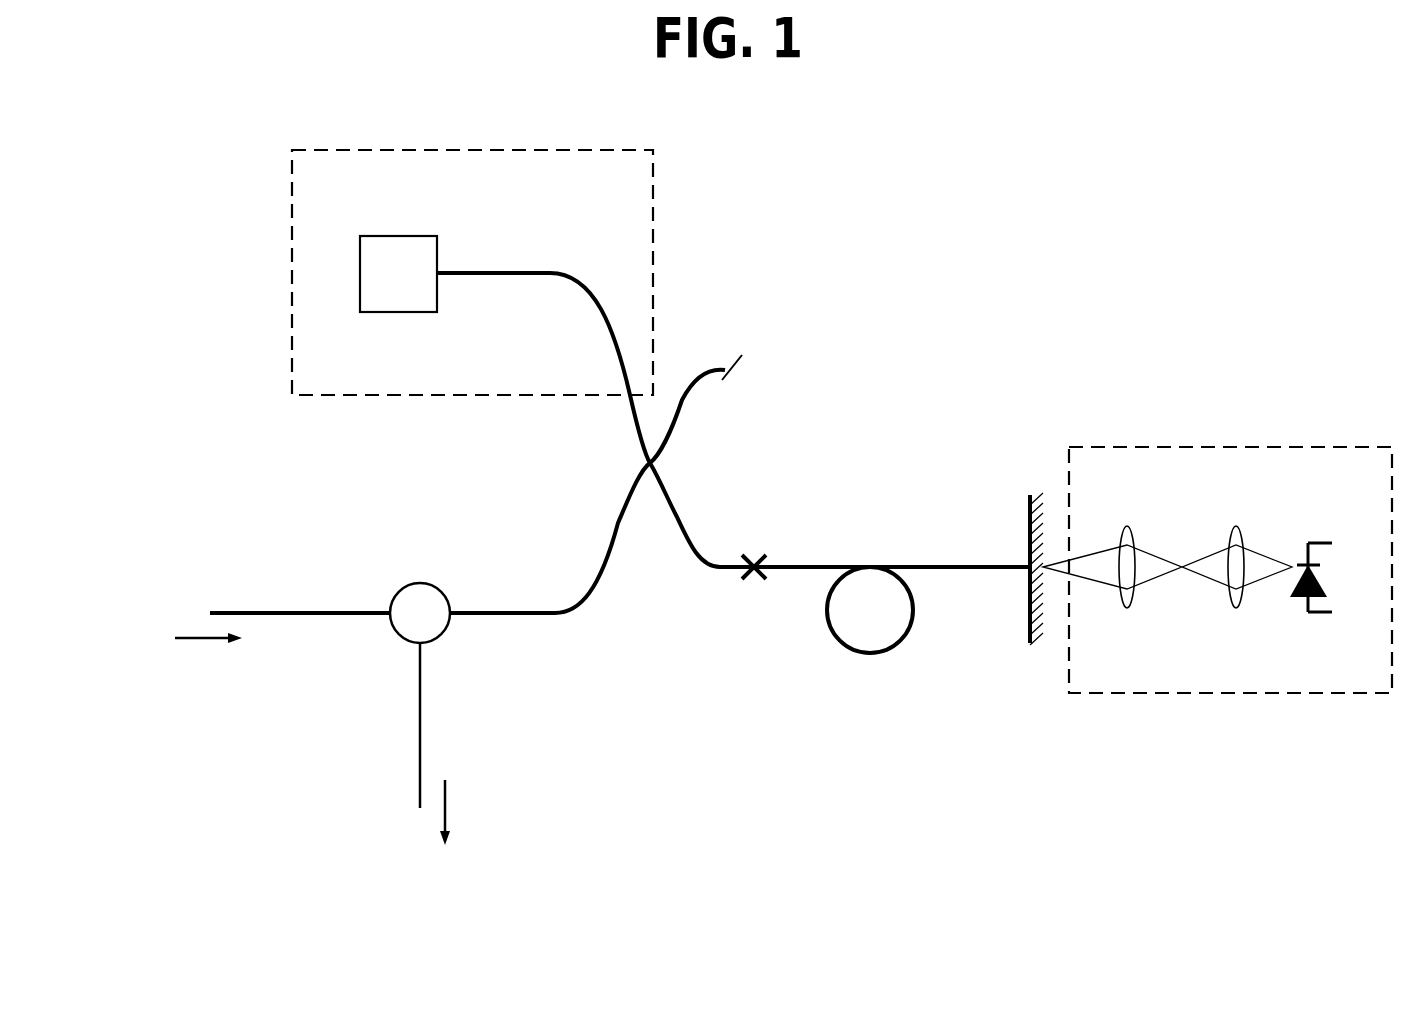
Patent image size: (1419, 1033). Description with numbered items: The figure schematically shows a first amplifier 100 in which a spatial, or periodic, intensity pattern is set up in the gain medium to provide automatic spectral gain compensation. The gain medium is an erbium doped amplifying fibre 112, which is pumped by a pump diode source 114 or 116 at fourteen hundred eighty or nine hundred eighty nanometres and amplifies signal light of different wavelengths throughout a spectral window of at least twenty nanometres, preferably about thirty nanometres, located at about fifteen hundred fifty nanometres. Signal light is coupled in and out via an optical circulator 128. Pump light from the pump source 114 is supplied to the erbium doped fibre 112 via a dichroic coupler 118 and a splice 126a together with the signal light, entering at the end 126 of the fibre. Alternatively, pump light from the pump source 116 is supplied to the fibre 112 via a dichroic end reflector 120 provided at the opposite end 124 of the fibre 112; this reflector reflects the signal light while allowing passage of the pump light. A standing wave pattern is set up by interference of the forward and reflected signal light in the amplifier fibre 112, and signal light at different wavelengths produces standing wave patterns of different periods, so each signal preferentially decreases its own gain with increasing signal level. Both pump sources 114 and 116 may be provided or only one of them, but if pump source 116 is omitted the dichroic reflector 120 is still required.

The amplifier 100 is at (903, 294).
The erbium doped amplifying fibre 112 is at (797, 597).
The pump diode source 114 is at (292, 302).
The pump diode source 116 is at (1312, 695).
The dichroic coupler 118 is at (604, 453).
The dichroic end reflector 120 is at (1026, 667).
The end of the fibre 124 is at (997, 563).
The end of the fibre 126 is at (768, 562).
The splice 126a is at (754, 560).
The optical circulator 128 is at (437, 642).